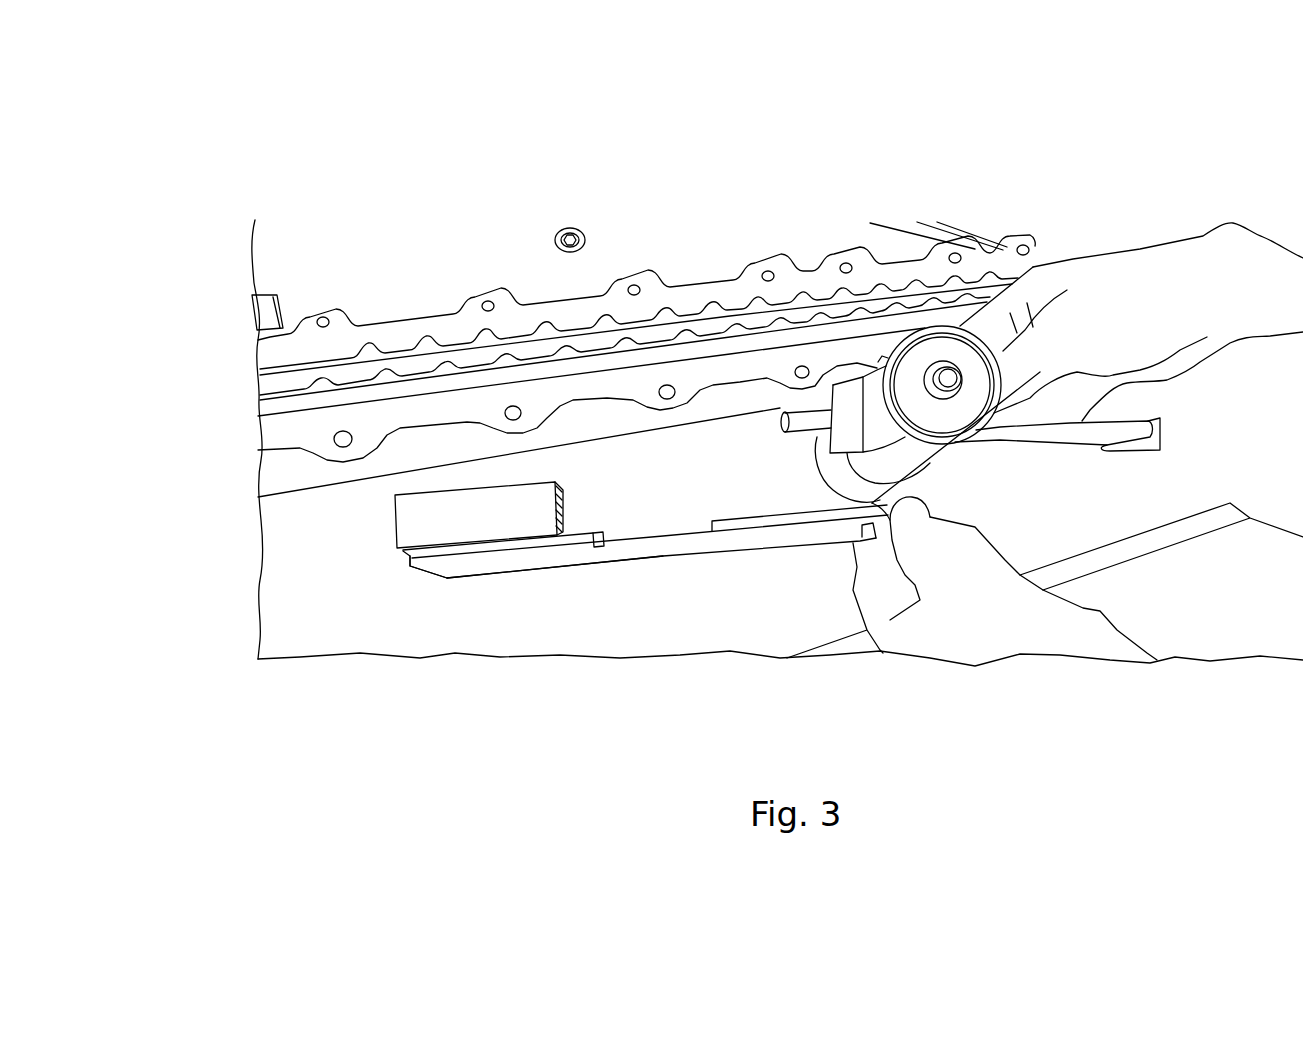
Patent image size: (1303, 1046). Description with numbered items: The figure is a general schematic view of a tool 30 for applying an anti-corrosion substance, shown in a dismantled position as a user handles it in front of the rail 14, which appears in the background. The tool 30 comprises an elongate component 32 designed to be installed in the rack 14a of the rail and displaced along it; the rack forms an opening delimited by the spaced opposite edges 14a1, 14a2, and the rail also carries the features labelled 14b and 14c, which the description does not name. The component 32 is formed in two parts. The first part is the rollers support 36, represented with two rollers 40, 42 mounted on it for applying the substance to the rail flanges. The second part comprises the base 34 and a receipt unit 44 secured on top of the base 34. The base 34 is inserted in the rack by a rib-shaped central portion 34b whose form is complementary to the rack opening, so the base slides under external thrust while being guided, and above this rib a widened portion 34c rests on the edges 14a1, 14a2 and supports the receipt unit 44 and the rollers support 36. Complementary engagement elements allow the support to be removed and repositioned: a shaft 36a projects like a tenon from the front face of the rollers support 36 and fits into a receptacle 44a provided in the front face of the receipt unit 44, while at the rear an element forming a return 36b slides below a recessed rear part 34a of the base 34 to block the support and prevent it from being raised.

The tool 30 is at (924, 156).
The rail 14 is at (775, 246).
The rack 14a is at (460, 330).
The edge of the rack 14a1 is at (252, 365).
The edge of the rack 14a2 is at (251, 392).
The lower flange of guide rail 14b is at (275, 437).
The end tab of guide rail 14c is at (266, 338).
The component 32 is at (383, 553).
The base 34 is at (570, 552).
The recessed rear part 34a is at (873, 541).
The central portion 34b is at (620, 557).
The widened portion 34c is at (420, 565).
The rollers support 36 is at (1079, 447).
The shaft 36a is at (795, 432).
The element forming a return 36b is at (1149, 453).
The roller 40 is at (937, 459).
The roller 42 is at (876, 493).
The receipt unit 44 is at (417, 514).
The receptacle 44a is at (565, 508).